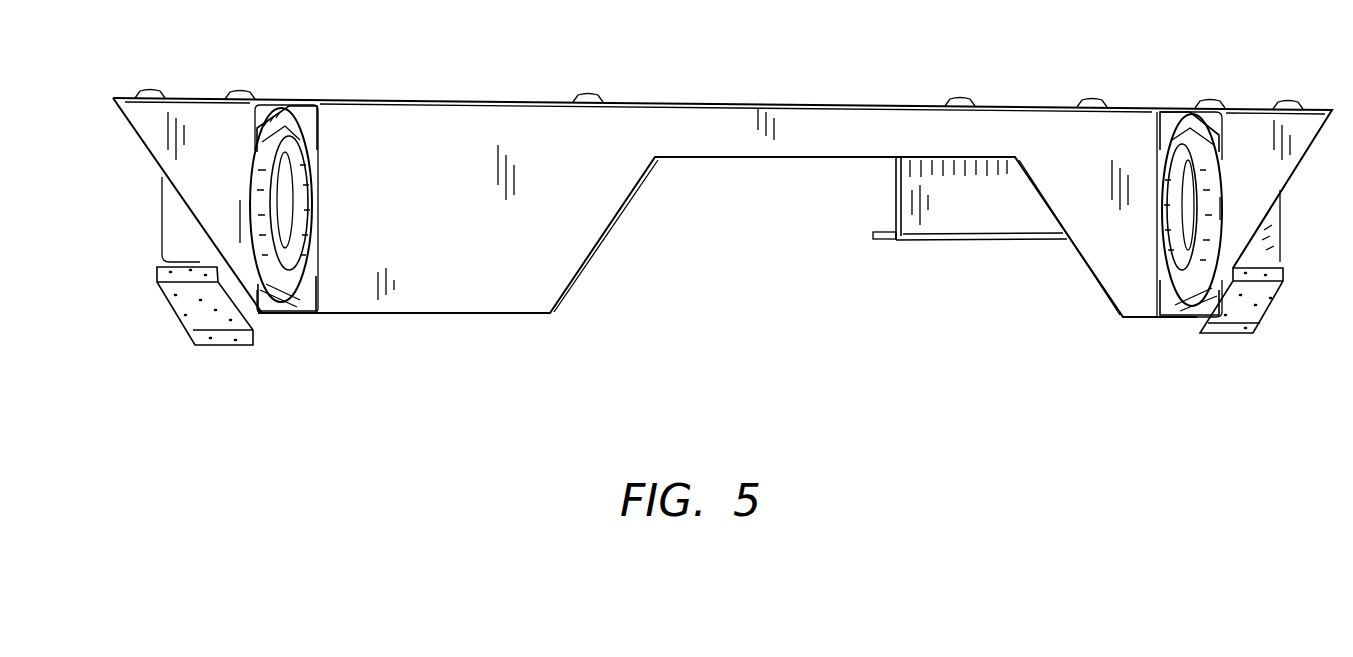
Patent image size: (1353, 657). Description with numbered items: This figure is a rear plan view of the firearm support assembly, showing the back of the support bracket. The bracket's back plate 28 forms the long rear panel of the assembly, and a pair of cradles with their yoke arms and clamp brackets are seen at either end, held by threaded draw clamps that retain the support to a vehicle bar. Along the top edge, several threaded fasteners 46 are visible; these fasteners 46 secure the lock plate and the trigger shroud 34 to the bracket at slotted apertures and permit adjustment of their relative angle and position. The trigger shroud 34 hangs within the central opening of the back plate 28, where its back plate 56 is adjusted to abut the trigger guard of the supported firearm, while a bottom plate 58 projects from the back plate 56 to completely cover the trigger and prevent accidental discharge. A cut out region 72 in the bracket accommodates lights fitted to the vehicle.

The back plate 28 is at (565, 278).
The trigger shroud 34 is at (918, 240).
The threaded fastener 46 is at (1083, 101).
The back plate of trigger shroud 56 is at (910, 195).
The bottom plate 58 is at (880, 239).
The cut out region 72 is at (773, 160).